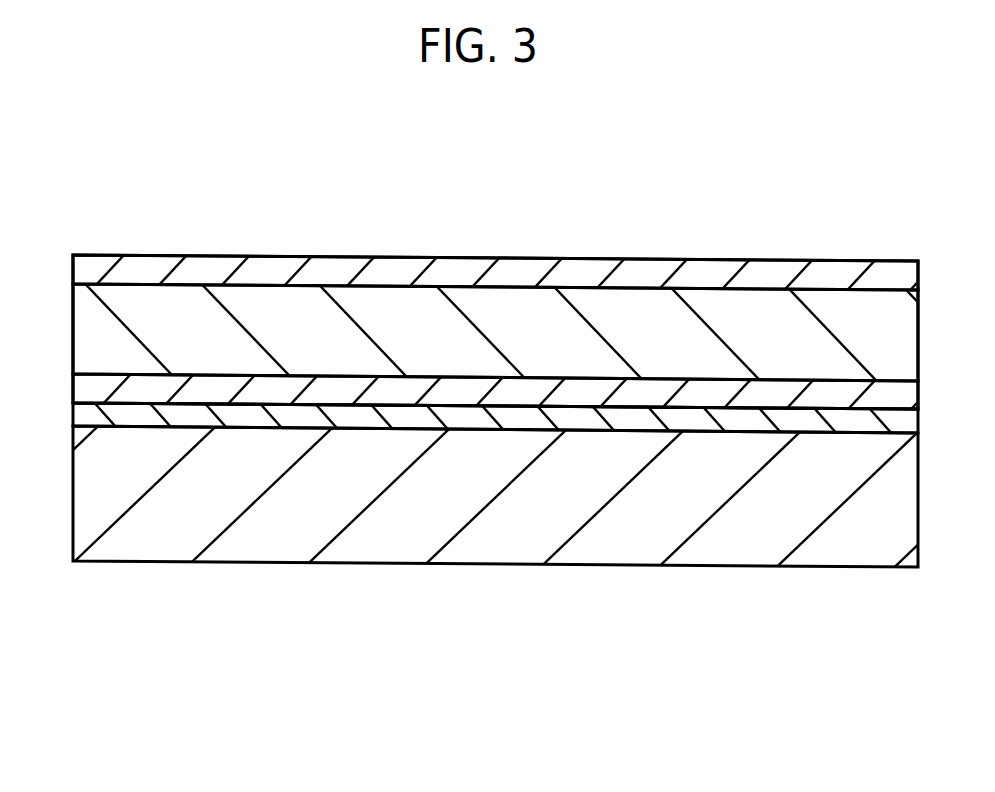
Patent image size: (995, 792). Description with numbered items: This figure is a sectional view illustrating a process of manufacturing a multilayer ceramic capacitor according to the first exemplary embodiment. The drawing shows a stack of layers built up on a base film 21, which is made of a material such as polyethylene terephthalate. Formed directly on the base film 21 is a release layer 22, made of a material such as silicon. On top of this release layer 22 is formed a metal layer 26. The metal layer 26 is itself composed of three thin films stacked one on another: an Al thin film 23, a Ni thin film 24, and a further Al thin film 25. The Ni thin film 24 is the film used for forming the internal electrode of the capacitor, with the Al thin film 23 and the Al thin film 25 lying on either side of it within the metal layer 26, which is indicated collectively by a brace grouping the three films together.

The base film 21 is at (578, 523).
The release layer 22 is at (482, 420).
The Al thin film 23 is at (337, 393).
The Ni thin film 24 is at (297, 361).
The Al thin film 25 is at (273, 273).
The metal layer 26 is at (117, 618).